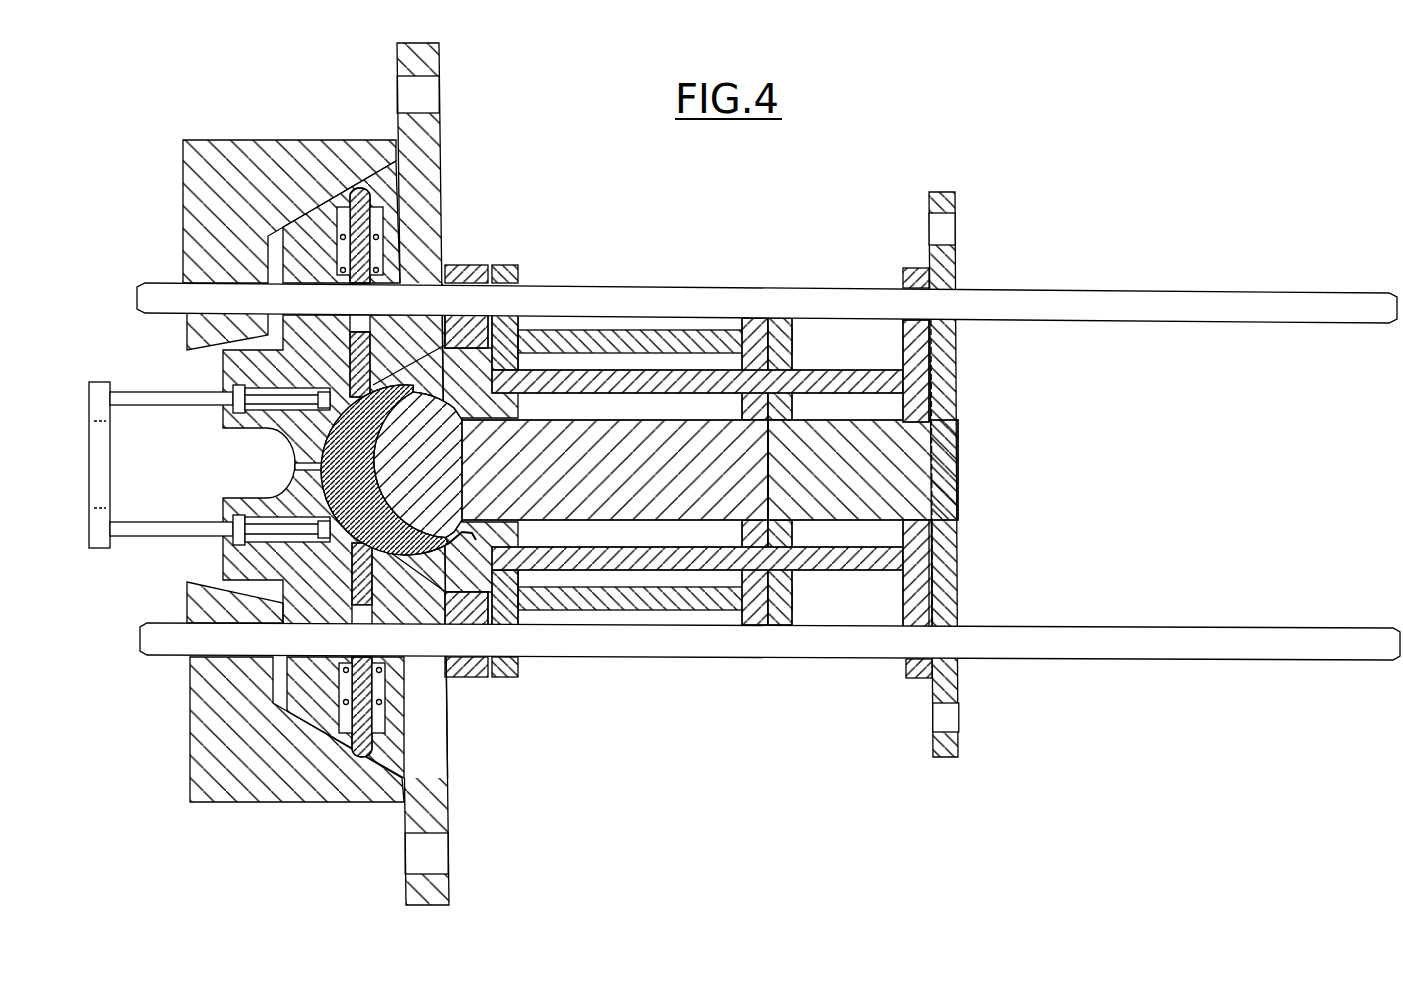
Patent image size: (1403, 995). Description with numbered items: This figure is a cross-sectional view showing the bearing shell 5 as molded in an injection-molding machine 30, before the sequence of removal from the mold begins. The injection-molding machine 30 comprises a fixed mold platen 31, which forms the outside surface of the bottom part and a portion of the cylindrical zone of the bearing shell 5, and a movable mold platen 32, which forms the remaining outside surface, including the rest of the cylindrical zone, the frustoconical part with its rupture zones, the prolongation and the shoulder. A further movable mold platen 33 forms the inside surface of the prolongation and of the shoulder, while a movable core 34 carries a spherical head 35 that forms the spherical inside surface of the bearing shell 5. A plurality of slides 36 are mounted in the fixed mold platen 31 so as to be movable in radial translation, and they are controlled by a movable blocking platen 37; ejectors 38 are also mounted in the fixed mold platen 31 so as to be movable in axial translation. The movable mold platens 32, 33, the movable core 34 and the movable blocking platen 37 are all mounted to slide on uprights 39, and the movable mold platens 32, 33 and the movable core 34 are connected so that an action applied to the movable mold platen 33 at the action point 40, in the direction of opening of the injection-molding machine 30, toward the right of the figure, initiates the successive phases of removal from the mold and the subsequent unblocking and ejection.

The bearing shell 5 is at (432, 547).
The injection-molding machine 30 is at (600, 255).
The fixed mold platen 31 is at (448, 148).
The movable mold platen 32 is at (468, 256).
The movable mold platen 33 is at (509, 256).
The movable core 34 is at (654, 408).
The spherical head 35 is at (430, 432).
The slides 36 is at (355, 203).
The movable blocking platen 37 is at (232, 205).
The ejectors 38 is at (162, 400).
The uprights 39 is at (1164, 300).
The action point on mold platen 40 is at (944, 192).